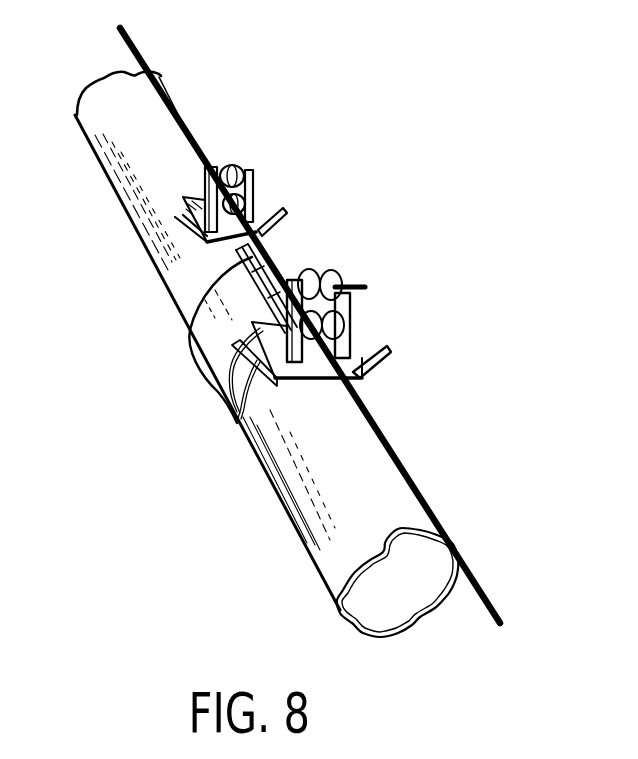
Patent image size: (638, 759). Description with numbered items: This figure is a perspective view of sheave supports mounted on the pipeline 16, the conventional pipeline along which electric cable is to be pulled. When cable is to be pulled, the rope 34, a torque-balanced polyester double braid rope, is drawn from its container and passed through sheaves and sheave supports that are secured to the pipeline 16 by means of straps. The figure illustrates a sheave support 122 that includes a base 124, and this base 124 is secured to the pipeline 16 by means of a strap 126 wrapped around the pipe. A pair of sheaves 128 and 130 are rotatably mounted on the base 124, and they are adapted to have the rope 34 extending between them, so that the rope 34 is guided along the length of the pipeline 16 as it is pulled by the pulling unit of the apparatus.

The pipeline 16 is at (298, 492).
The rope 34 is at (483, 590).
The sheave support 122 is at (357, 352).
The base 124 is at (316, 366).
The strap 126 is at (233, 407).
The sheave 128 is at (331, 330).
The sheave 130 is at (328, 275).